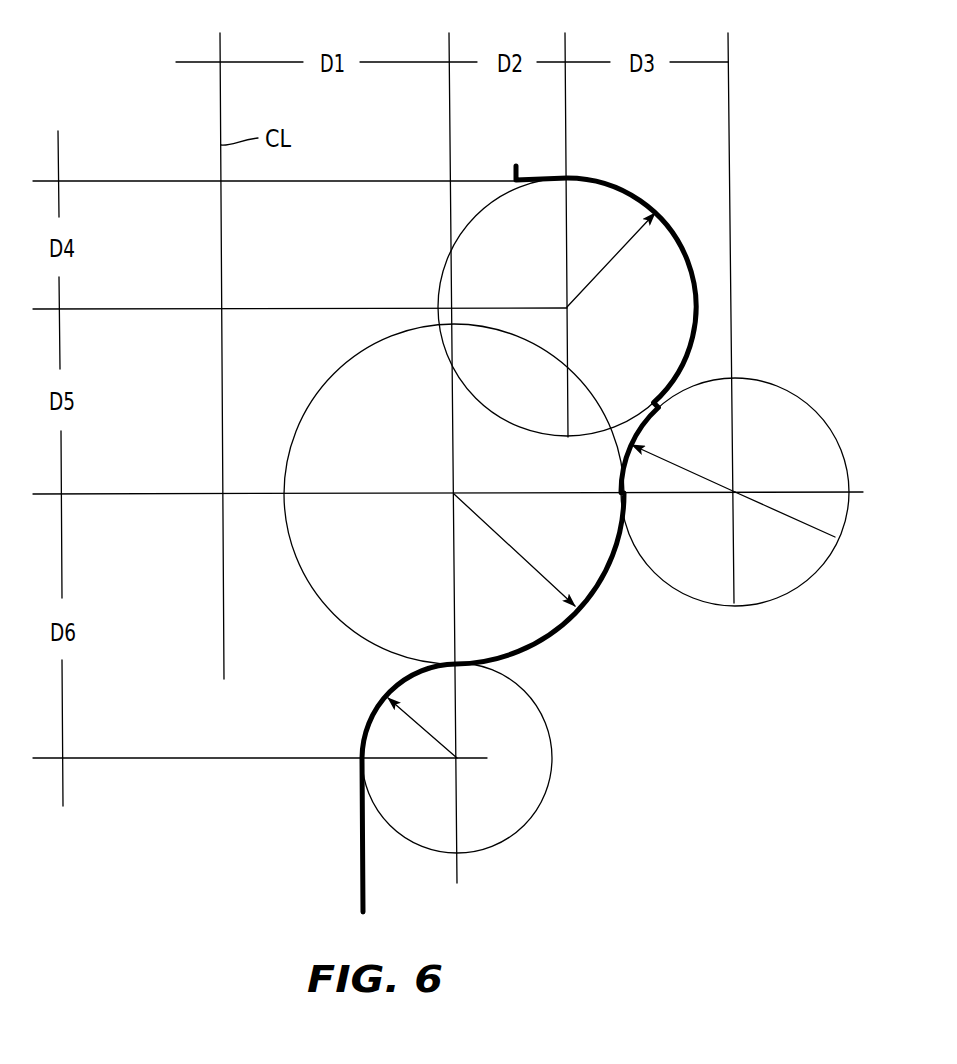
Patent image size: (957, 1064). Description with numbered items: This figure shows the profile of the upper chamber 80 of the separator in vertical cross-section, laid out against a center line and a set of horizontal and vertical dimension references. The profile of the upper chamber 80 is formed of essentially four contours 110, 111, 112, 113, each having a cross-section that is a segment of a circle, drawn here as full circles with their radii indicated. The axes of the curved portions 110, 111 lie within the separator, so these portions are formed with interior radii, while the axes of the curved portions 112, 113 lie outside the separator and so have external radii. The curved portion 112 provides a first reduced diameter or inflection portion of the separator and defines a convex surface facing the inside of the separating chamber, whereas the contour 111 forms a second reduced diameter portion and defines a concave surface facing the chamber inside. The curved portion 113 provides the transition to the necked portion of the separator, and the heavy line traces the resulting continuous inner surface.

The upper chamber 80 is at (800, 276).
The first curved portion 110 is at (672, 224).
The second curved portion 111 is at (573, 622).
The third curved portion 112 is at (663, 402).
The fourth curved portion 113 is at (420, 673).